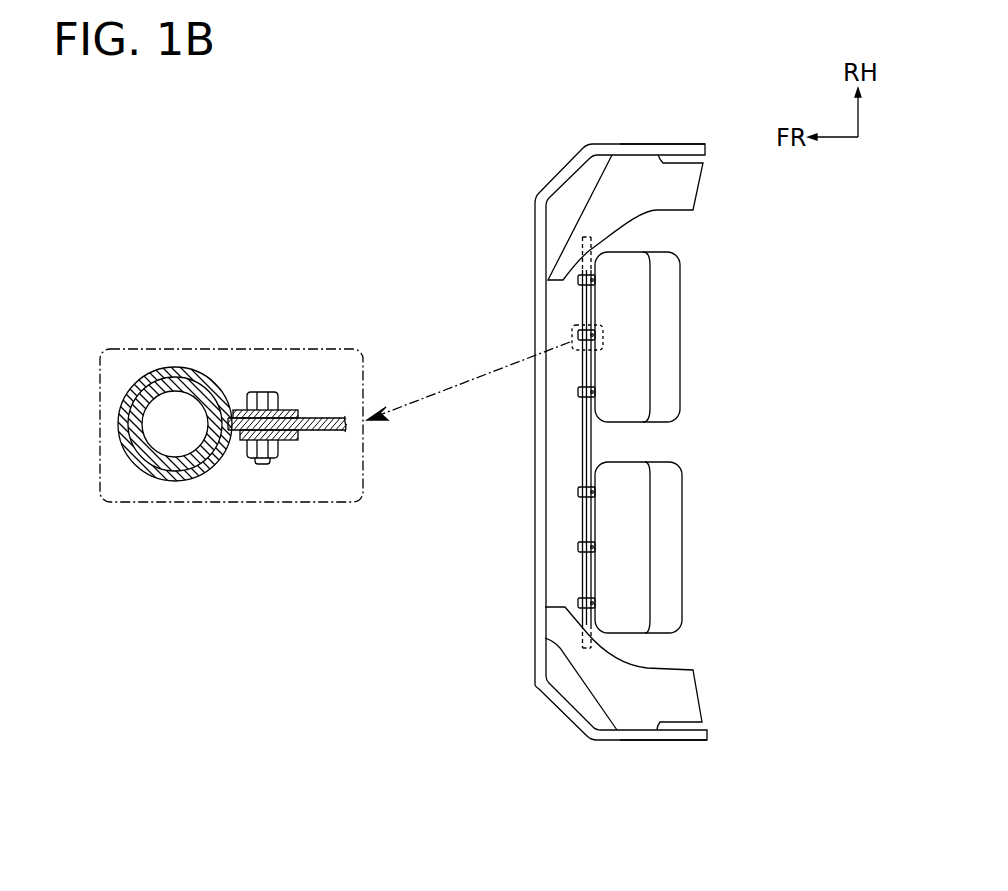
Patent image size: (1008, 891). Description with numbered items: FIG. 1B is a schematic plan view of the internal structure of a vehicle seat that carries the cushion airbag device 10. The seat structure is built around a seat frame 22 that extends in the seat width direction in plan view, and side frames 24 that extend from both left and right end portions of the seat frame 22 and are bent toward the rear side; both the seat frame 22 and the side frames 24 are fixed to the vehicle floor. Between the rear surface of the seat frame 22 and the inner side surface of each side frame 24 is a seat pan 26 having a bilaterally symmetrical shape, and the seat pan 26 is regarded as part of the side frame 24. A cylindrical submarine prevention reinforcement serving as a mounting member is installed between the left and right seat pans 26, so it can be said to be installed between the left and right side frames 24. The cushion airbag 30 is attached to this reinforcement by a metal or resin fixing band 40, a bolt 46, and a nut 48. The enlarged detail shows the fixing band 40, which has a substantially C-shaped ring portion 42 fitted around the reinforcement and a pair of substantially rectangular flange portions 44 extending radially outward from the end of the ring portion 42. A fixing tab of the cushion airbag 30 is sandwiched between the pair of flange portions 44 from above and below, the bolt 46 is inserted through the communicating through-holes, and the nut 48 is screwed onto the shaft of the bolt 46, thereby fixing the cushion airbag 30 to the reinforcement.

The cushion airbag device 10 is at (714, 448).
The seat frame 22 is at (535, 243).
The side frame 24 is at (660, 143).
The seat pan 26 is at (690, 190).
The cushion airbag 30 is at (668, 330).
The fixing band 40 is at (175, 368).
The ring portion 42 is at (223, 470).
The flange portion 44 is at (295, 410).
The bolt 46 is at (263, 391).
The nut 48 is at (277, 460).